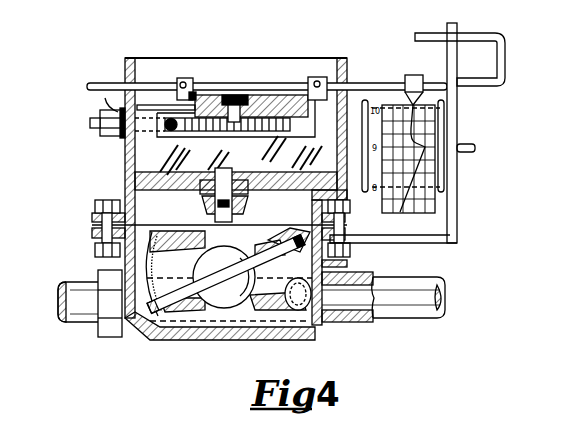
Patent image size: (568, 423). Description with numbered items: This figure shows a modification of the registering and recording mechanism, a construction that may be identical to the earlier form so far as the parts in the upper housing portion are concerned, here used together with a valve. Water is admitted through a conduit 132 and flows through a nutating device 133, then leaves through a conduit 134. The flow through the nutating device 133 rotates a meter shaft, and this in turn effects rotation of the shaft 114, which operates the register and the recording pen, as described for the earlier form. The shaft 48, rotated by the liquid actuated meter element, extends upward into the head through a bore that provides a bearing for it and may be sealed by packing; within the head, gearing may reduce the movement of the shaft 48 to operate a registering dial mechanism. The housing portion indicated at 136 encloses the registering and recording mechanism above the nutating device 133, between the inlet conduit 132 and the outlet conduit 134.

The shaft 114 is at (262, 93).
The housing 136 is at (148, 164).
The shaft 48 is at (224, 186).
The nutating device 133 is at (155, 320).
The conduit 132 is at (83, 310).
The conduit 134 is at (412, 285).